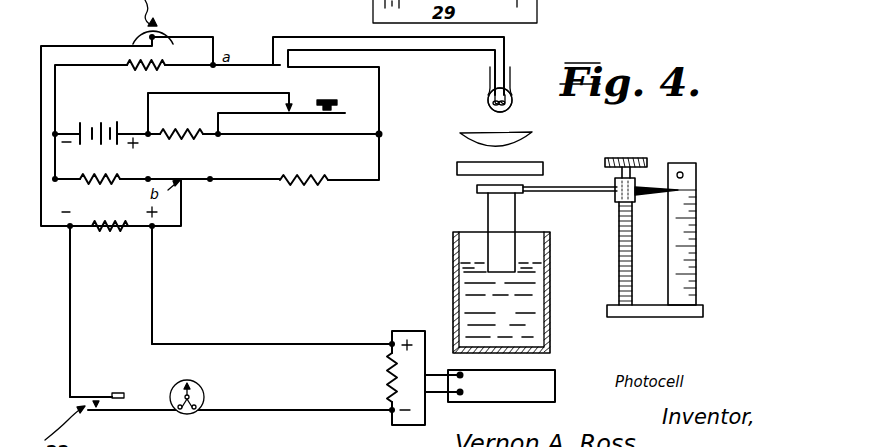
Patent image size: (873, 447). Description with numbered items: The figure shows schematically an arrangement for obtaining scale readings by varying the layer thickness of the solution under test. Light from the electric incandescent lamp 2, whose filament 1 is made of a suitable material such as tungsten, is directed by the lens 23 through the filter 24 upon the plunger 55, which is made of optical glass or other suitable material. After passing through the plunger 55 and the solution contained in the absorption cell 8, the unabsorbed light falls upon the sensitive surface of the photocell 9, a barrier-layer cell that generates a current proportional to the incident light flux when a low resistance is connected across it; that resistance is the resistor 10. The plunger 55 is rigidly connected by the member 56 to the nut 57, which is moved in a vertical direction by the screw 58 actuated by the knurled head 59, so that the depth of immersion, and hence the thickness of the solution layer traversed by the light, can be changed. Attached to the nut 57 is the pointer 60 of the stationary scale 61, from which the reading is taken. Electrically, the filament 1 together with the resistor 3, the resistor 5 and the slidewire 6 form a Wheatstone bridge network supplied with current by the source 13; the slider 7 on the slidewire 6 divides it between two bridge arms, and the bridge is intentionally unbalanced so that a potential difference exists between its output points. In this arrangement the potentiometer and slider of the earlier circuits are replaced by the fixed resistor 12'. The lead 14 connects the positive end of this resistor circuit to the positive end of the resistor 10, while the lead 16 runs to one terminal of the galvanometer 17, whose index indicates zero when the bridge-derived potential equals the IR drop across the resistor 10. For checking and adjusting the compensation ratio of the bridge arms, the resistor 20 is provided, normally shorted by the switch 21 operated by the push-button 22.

The filament 1 is at (488, 104).
The electric incandescent lamp 2 is at (512, 105).
The resistor 3 is at (160, 61).
The resistor 5 is at (308, 175).
The slidewire 6 is at (183, 176).
The slider 7 is at (190, 185).
The absorption cell 8 is at (552, 287).
The photocell 9 is at (545, 379).
The resistor 10 is at (386, 369).
The fixed resistor 12' is at (110, 215).
The source 13 is at (117, 112).
The lead 14 is at (152, 318).
The lead 16 is at (70, 357).
The galvanometer 17 is at (204, 396).
The resistor 20 is at (188, 140).
The switch 21 is at (298, 92).
The push-button 22 is at (338, 82).
The lens 23 is at (510, 139).
The filter 24 is at (463, 168).
The plunger 55 is at (515, 216).
The member 56 is at (579, 187).
The nut 57 is at (617, 204).
The screw 58 is at (619, 270).
The knurled head 59 is at (642, 162).
The pointer 60 is at (652, 195).
The stationary scale 61 is at (696, 248).